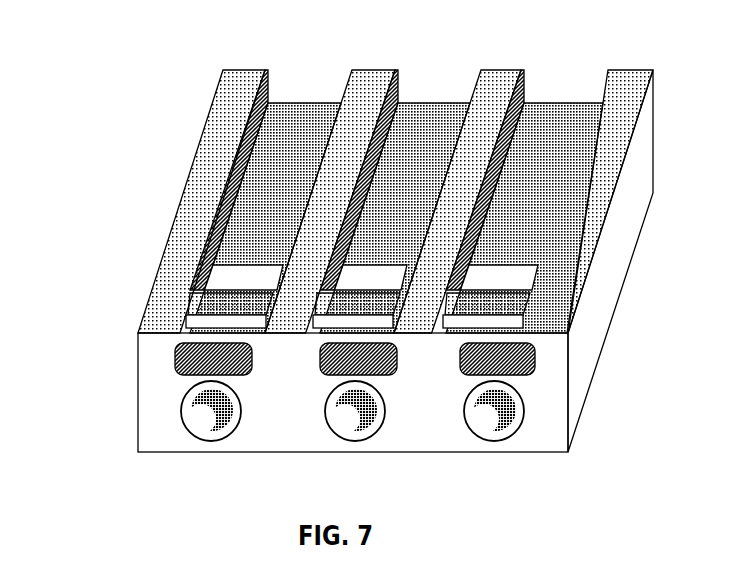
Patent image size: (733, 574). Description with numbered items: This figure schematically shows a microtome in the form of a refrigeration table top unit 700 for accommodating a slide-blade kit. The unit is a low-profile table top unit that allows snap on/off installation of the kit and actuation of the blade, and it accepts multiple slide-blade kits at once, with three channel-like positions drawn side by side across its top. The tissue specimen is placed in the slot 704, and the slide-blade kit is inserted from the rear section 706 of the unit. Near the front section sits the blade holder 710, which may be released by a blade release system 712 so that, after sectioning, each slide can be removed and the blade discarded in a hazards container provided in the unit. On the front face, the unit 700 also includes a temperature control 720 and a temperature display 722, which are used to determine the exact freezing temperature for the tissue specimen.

The refrigeration table top unit 700 is at (125, 98).
The slot 704 is at (288, 187).
The rear section 706 is at (577, 88).
The blade holder 710 is at (235, 275).
The blade release system 712 is at (232, 308).
The temperature control 720 is at (482, 423).
The temperature display 722 is at (538, 353).